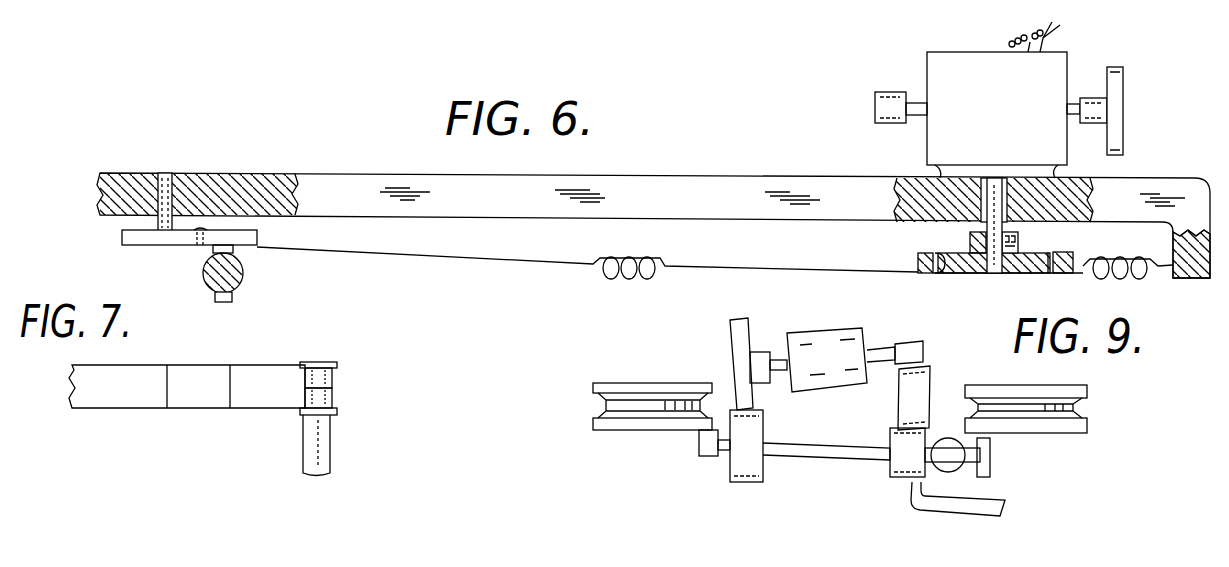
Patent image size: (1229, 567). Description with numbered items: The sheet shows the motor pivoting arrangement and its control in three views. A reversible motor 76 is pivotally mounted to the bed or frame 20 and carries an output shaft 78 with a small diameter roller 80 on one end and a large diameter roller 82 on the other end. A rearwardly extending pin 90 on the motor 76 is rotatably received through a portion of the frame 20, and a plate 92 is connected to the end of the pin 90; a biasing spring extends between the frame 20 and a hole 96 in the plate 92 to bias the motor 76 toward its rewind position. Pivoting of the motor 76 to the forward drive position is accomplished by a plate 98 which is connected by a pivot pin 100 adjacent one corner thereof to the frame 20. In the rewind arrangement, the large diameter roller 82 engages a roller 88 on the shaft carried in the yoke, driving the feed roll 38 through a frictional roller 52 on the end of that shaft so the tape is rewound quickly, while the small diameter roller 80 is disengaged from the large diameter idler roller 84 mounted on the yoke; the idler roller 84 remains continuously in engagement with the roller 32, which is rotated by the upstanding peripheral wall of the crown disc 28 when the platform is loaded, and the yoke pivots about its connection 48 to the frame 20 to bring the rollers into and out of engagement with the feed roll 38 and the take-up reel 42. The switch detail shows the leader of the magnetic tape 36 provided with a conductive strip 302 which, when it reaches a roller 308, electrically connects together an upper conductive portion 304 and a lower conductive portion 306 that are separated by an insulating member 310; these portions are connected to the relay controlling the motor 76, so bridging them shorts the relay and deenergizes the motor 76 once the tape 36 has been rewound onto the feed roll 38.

In FIG. 6, the frame 20 is at (737, 185).
In FIG. 6, the pivot pin 100 is at (164, 176).
In FIG. 6, the plate 98 is at (158, 244).
In FIG. 6, the reversible motor 76 is at (972, 60).
In FIG. 9, the reversible motor 76 is at (836, 336).
In FIG. 6, the small diameter roller 80 is at (897, 92).
In FIG. 9, the small diameter roller 80 is at (922, 345).
In FIG. 6, the output shaft 78 is at (1075, 100).
In FIG. 6, the large diameter roller 82 is at (1124, 78).
In FIG. 9, the large diameter roller 82 is at (735, 347).
In FIG. 6, the pin 90 is at (993, 269).
In FIG. 6, the plate 92 is at (1028, 271).
In FIG. 6, the hole 96 is at (1053, 262).
In FIG. 7, the magnetic tape 36 is at (73, 372).
In FIG. 7, the conductive strip 302 is at (202, 378).
In FIG. 7, the upper conductive portion 304 is at (303, 370).
In FIG. 7, the roller 308 is at (333, 352).
In FIG. 7, the insulating member 310 is at (334, 385).
In FIG. 7, the lower conductive portion 306 is at (337, 401).
In FIG. 9, the feed roll 38 is at (622, 428).
In FIG. 9, the frictional roller 52 is at (700, 447).
In FIG. 9, the roller 88 is at (760, 422).
In FIG. 9, the large diameter idler roller 84 is at (900, 396).
In FIG. 9, the roller 32 is at (890, 465).
In FIG. 9, the pivotal connection 48 is at (950, 470).
In FIG. 9, the crown disc 28 is at (1008, 505).
In FIG. 9, the take-up reel 42 is at (1062, 388).